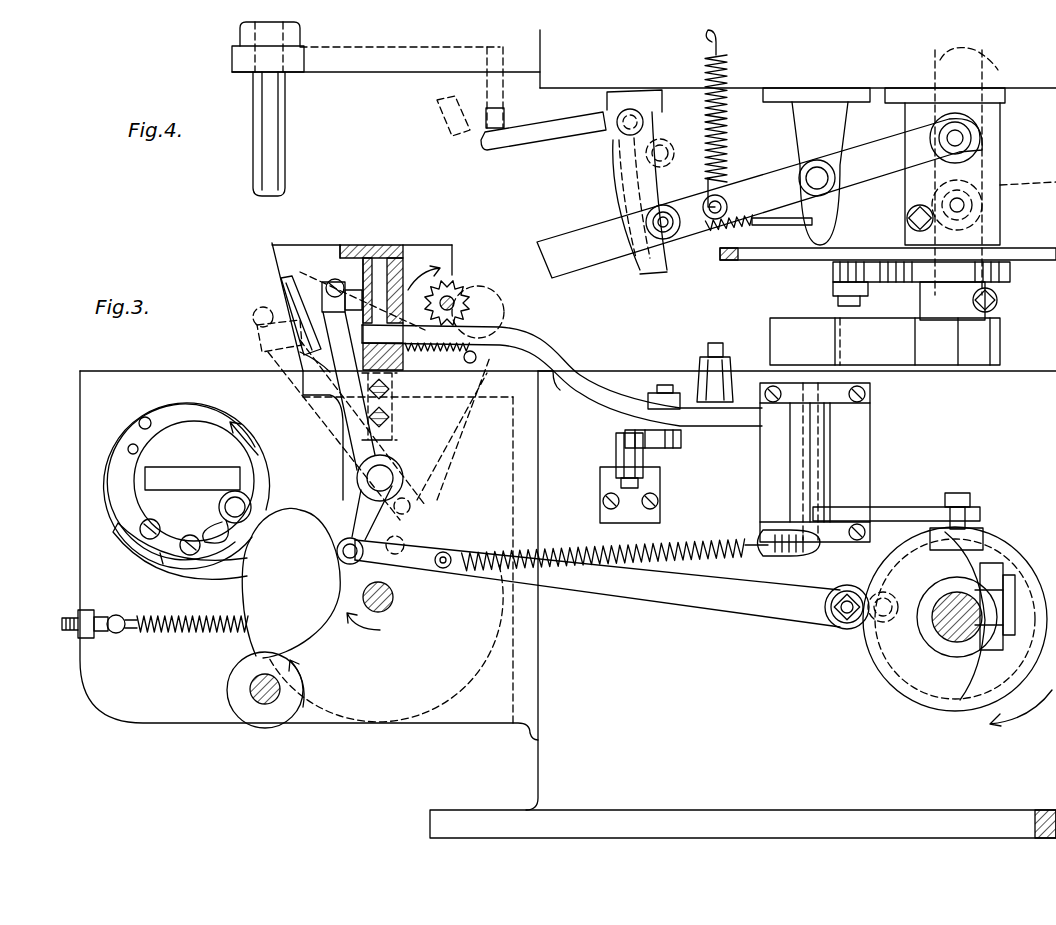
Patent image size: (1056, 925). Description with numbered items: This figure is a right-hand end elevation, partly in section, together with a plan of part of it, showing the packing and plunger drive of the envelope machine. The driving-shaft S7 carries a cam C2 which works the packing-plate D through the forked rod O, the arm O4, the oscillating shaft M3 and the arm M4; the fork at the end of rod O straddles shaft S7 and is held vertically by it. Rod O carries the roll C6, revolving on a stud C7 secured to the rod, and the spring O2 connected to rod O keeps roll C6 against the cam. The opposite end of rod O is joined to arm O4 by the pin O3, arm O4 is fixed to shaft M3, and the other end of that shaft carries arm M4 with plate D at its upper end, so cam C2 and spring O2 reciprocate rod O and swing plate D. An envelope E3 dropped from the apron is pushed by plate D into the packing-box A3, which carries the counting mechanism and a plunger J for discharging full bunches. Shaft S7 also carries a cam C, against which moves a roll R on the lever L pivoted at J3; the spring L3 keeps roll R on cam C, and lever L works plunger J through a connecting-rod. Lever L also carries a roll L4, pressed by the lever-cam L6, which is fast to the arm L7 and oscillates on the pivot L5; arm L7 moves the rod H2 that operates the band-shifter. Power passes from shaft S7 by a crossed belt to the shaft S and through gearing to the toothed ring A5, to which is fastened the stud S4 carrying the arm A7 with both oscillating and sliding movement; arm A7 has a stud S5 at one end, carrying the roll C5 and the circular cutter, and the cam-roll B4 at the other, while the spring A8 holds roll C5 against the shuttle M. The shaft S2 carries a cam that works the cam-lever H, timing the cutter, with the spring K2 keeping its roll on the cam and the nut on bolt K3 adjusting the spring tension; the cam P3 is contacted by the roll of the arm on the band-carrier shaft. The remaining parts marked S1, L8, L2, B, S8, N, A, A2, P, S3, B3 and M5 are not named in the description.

In FIG. 4, the stud/shaft S1 is at (288, 132).
In FIG. 3, the stud/shaft S1 is at (262, 702).
In FIG. 4, the rod H2 is at (484, 108).
In FIG. 4, the arm L7 is at (556, 137).
In FIG. 4, the pivot pin L8 is at (634, 110).
In FIG. 3, the pivot pin L8 is at (614, 462).
In FIG. 4, the lever-cam L6 is at (616, 192).
In FIG. 4, the spring L3 is at (732, 78).
In FIG. 4, the lever L is at (759, 198).
In FIG. 3, the lever L is at (562, 362).
In FIG. 4, the link bar L2 is at (887, 144).
In FIG. 3, the link bar L2 is at (878, 512).
In FIG. 4, the pivot L5 is at (744, 235).
In FIG. 3, the pivot L5 is at (665, 384).
In FIG. 4, the pivot J3 is at (806, 255).
In FIG. 3, the pivot J3 is at (872, 445).
In FIG. 4, the roll R is at (906, 96).
In FIG. 4, the driving-shaft S7 is at (978, 62).
In FIG. 4, the bar B is at (1000, 115).
In FIG. 3, the bar B is at (492, 320).
In FIG. 4, the nut S8 is at (990, 152).
In FIG. 3, the nut S8 is at (962, 494).
In FIG. 4, the spring O2 is at (715, 240).
In FIG. 3, the spring O2 is at (703, 546).
In FIG. 4, the cam C is at (1010, 272).
In FIG. 3, the cam C is at (1005, 555).
In FIG. 4, the roll C6 is at (836, 300).
In FIG. 3, the roll C6 is at (838, 622).
In FIG. 4, the stud C7 is at (858, 297).
In FIG. 3, the stud C7 is at (856, 632).
In FIG. 4, the block N is at (1003, 342).
In FIG. 3, the frame A is at (568, 604).
In FIG. 3, the plate A2 is at (390, 560).
In FIG. 3, the toothed ring A5 is at (187, 486).
In FIG. 3, the shuttle M is at (192, 478).
In FIG. 3, the spring A8 is at (122, 472).
In FIG. 3, the roll C5 is at (250, 484).
In FIG. 3, the stud S5 is at (252, 500).
In FIG. 3, the arm A7 is at (219, 517).
In FIG. 3, the cam-roll B4 is at (114, 535).
In FIG. 3, the stud S4 is at (185, 557).
In FIG. 3, the cam-lever H is at (239, 558).
In FIG. 3, the bolt K3 is at (66, 624).
In FIG. 3, the spring K2 is at (203, 632).
In FIG. 3, the cam P3 is at (291, 583).
In FIG. 3, the pin O3 is at (338, 554).
In FIG. 3, the shaft S2 is at (392, 602).
In FIG. 3, the packing-box A3 is at (349, 397).
In FIG. 3, the plunger J is at (382, 262).
In FIG. 3, the packing-plate D is at (336, 258).
In FIG. 3, the envelope E3 is at (281, 277).
In FIG. 3, the arm M4 is at (268, 342).
In FIG. 3, the pinion P is at (460, 282).
In FIG. 3, the shaft S3 is at (474, 292).
In FIG. 3, the pin B3 is at (478, 358).
In FIG. 3, the oscillating shaft M3 is at (418, 480).
In FIG. 3, the pin M5 is at (412, 506).
In FIG. 3, the arm O4 is at (420, 524).
In FIG. 3, the forked rod O is at (597, 583).
In FIG. 3, the roll L4 is at (684, 448).
In FIG. 3, the cam C2 is at (957, 631).
In FIG. 3, the shaft S is at (1005, 600).